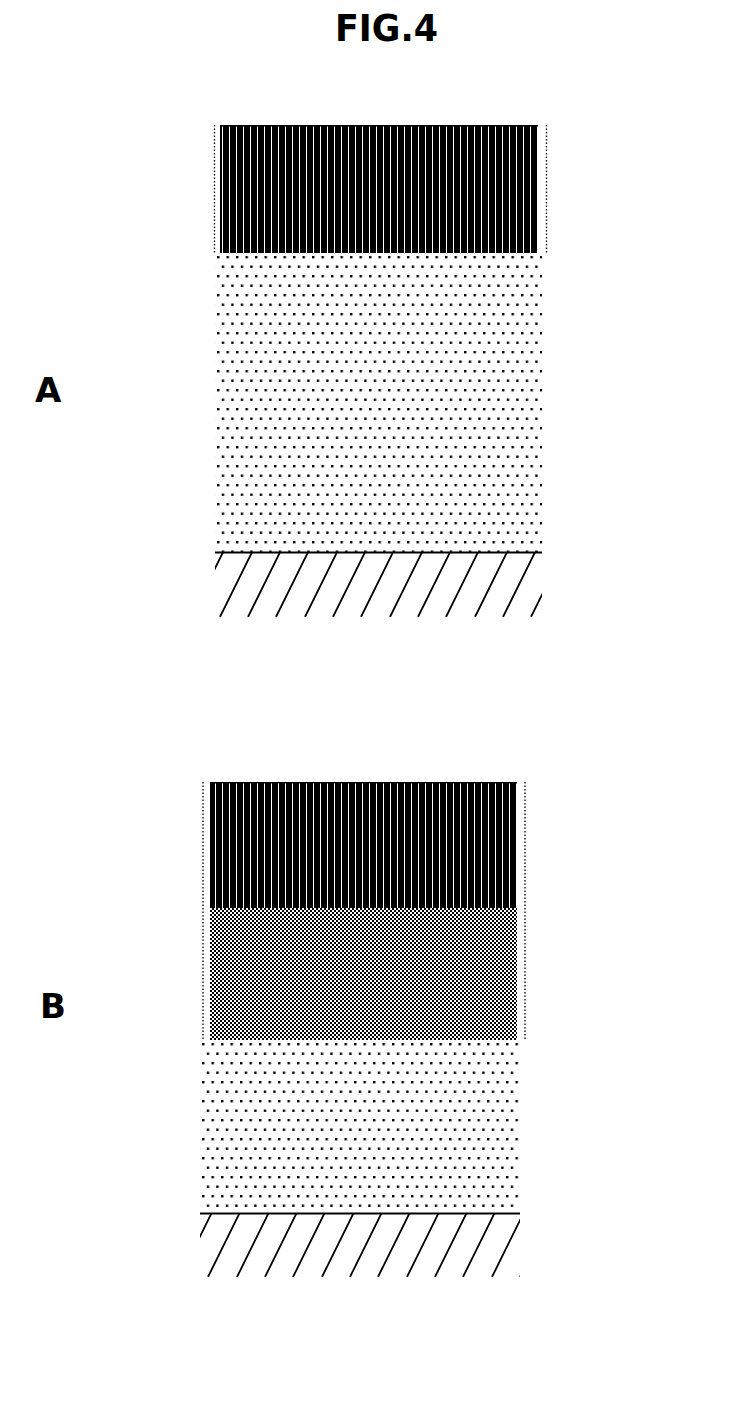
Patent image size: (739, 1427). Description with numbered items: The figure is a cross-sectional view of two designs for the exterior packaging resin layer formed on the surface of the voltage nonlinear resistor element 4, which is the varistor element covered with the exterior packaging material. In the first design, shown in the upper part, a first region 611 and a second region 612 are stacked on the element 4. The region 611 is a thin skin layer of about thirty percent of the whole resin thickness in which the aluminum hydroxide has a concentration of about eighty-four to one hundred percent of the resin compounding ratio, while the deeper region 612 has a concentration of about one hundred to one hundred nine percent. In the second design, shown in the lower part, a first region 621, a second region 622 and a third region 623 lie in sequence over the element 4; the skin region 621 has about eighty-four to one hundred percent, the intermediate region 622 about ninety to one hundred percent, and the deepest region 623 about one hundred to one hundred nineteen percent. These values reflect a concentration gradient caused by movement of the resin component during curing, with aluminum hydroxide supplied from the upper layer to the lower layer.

The first region 611 is at (575, 125).
The second region 612 is at (575, 253).
The first region 621 is at (572, 782).
The second region 622 is at (572, 908).
The third region 623 is at (572, 1040).
The voltage nonlinear resistor element 4 is at (575, 552).